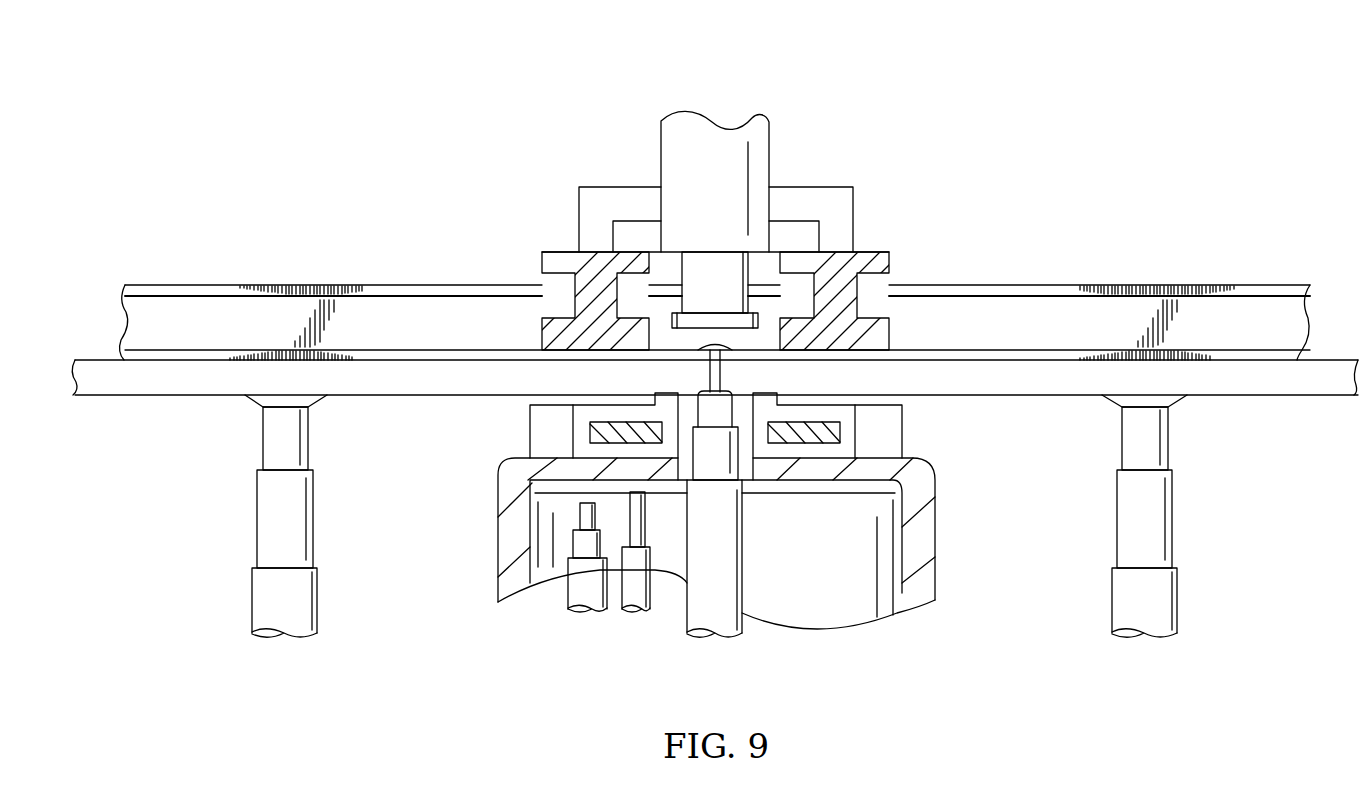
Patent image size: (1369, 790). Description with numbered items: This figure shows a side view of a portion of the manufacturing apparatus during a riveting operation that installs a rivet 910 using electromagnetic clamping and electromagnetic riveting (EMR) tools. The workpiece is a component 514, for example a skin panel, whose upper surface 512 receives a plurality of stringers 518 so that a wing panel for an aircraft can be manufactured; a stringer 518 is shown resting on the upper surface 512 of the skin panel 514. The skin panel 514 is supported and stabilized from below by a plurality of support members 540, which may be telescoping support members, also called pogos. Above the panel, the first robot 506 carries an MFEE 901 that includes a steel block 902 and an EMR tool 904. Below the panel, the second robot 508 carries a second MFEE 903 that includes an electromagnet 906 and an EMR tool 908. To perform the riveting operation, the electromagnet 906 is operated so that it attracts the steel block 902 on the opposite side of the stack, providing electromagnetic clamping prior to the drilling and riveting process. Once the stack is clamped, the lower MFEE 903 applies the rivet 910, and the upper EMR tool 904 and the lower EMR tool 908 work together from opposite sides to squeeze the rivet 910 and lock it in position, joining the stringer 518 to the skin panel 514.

The first robot 506 is at (687, 108).
The MFEE 901 is at (1023, 116).
The stringer 518 is at (192, 292).
The component 514 is at (92, 354).
The upper surface 512 is at (1334, 360).
The steel block 902 is at (880, 262).
The EMR tool 904 is at (735, 297).
The rivet 910 is at (720, 372).
The electromagnet 906 is at (838, 430).
The MFEE 903 is at (480, 537).
The EMR tool 908 is at (715, 467).
The second robot 508 is at (733, 646).
The support member 540 is at (268, 520).